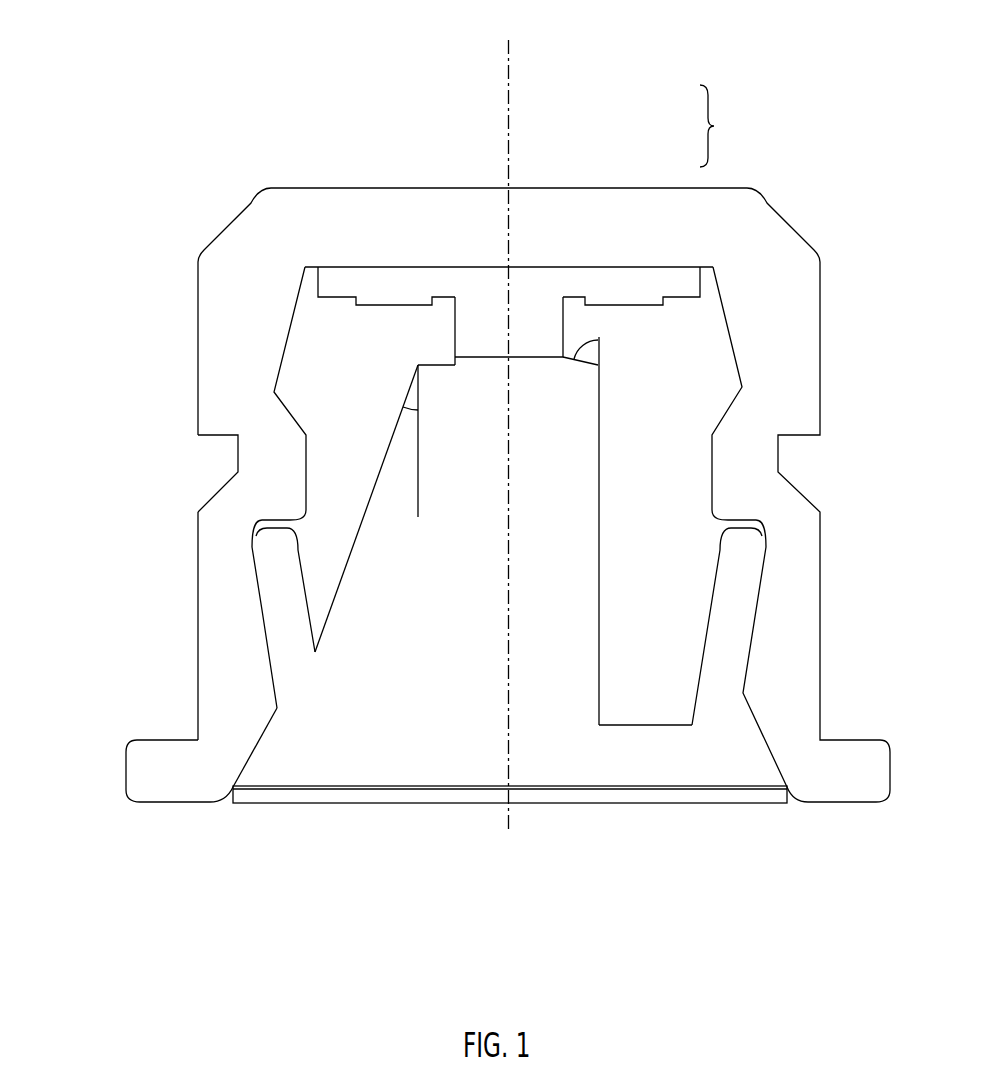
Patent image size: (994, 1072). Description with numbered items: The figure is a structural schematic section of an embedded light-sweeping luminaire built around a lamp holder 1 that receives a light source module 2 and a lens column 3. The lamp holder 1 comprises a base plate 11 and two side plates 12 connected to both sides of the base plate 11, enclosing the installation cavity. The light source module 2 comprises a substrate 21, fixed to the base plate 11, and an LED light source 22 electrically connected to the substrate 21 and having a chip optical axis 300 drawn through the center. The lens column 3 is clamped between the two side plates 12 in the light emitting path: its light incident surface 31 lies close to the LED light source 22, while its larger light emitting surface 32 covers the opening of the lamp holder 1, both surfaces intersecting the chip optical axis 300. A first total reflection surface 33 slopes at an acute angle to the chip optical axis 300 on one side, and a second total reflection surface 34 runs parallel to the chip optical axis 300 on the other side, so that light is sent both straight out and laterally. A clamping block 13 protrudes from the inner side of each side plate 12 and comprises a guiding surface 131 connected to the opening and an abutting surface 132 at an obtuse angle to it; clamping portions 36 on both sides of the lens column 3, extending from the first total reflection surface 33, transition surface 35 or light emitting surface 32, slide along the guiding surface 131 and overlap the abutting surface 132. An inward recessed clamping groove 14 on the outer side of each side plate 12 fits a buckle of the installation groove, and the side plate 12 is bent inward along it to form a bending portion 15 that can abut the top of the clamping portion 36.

The lamp holder 1 is at (783, 364).
The base plate 11 is at (445, 213).
The side plate 12 is at (212, 573).
The clamping block 13 is at (762, 695).
The guiding surface 131 is at (250, 748).
The abutting surface 132 is at (262, 610).
The clamping groove 14 is at (213, 457).
The bending portion 15 is at (302, 505).
The light source module 2 is at (526, 176).
The substrate 21 is at (637, 290).
The LED light source 22 is at (528, 330).
The lens column 3 is at (543, 603).
The light incident surface 31 is at (443, 363).
The light emitting surface 32 is at (358, 807).
The first total reflection surface 33 is at (372, 507).
The second total reflection surface 34 is at (600, 652).
The transition surface 35 is at (623, 727).
The clamping portion 36 is at (733, 602).
The chip optical axis 300 is at (509, 157).